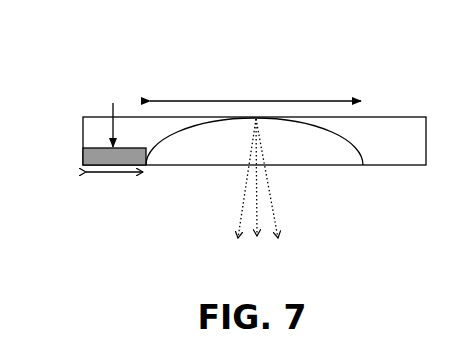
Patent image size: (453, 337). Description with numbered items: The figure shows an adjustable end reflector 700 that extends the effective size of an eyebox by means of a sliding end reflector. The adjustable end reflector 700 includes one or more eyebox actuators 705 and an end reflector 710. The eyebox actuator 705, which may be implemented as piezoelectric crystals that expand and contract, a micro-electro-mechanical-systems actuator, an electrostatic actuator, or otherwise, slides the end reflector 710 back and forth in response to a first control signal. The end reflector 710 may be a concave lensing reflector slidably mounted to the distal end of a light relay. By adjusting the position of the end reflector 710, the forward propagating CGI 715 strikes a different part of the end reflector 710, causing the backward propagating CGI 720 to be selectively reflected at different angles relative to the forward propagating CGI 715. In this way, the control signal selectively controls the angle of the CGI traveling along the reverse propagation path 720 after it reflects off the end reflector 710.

The adjustable end reflector 700 is at (348, 52).
The eyebox actuator 705 is at (90, 158).
The end reflector 710 is at (254, 133).
The forward propagating CGI 715 is at (256, 228).
The backward propagating CGI 720 is at (243, 198).